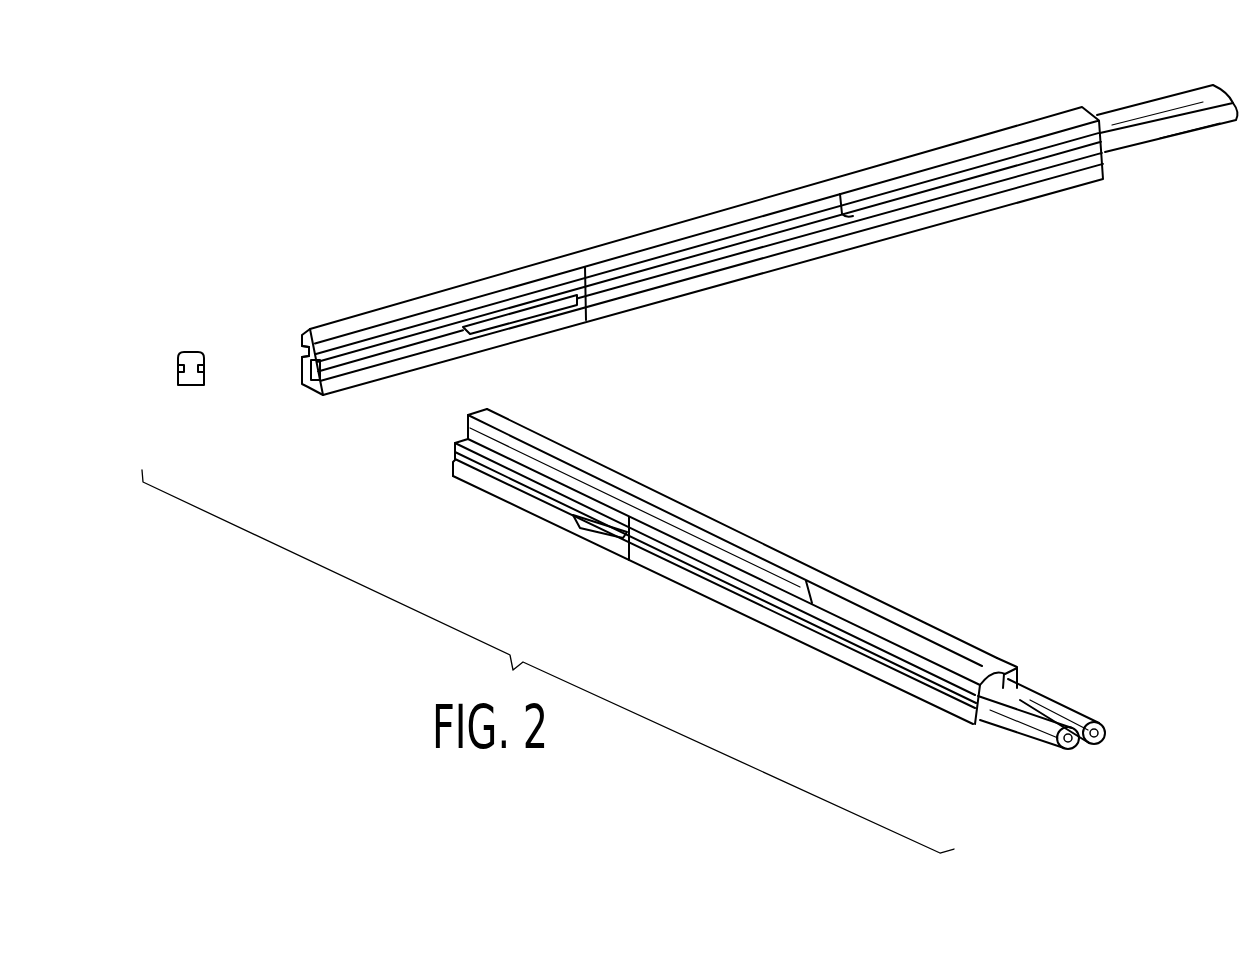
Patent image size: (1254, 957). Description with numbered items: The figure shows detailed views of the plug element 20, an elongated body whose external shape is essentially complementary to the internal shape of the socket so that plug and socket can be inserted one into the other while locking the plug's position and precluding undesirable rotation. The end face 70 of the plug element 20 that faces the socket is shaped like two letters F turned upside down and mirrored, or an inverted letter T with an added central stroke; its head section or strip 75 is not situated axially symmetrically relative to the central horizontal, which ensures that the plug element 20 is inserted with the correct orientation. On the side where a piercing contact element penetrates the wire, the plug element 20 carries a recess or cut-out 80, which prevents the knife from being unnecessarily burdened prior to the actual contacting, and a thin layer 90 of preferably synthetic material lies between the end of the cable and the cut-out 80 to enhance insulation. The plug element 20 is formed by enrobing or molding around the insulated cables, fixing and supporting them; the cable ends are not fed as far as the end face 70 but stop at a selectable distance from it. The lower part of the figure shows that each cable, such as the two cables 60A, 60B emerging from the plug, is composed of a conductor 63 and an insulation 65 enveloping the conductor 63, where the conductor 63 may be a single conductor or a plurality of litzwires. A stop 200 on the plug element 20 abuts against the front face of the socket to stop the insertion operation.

The plug element 20 is at (935, 157).
The first rod 60A is at (1168, 134).
The second rod 60B is at (1153, 101).
The conductor 63 is at (1072, 745).
The insulation 65 is at (1062, 749).
The end face 70 is at (188, 394).
The head section or strip 75 is at (188, 350).
The recess or cut-out 80 is at (540, 316).
The thin layer 90 is at (584, 267).
The stop 200 is at (851, 216).